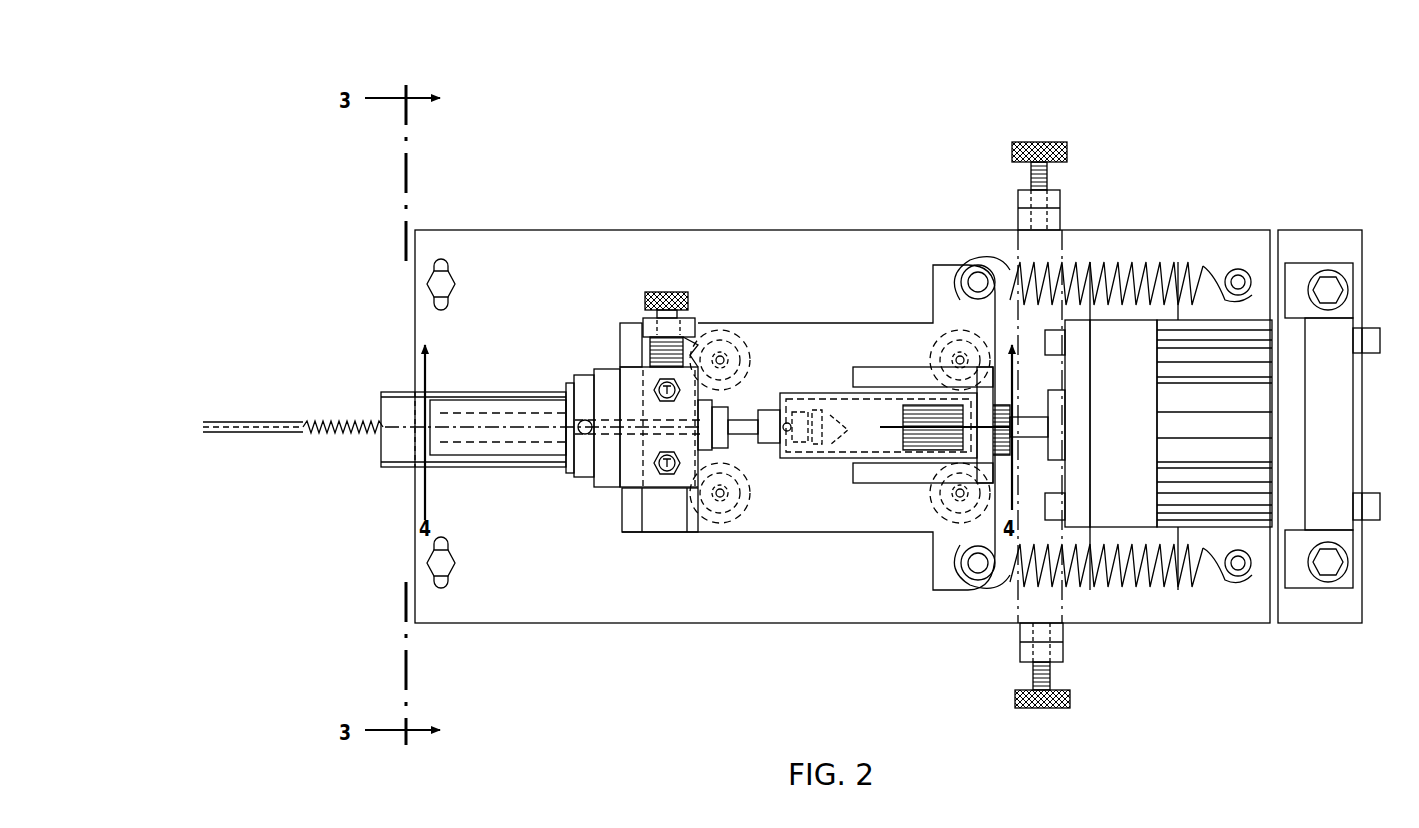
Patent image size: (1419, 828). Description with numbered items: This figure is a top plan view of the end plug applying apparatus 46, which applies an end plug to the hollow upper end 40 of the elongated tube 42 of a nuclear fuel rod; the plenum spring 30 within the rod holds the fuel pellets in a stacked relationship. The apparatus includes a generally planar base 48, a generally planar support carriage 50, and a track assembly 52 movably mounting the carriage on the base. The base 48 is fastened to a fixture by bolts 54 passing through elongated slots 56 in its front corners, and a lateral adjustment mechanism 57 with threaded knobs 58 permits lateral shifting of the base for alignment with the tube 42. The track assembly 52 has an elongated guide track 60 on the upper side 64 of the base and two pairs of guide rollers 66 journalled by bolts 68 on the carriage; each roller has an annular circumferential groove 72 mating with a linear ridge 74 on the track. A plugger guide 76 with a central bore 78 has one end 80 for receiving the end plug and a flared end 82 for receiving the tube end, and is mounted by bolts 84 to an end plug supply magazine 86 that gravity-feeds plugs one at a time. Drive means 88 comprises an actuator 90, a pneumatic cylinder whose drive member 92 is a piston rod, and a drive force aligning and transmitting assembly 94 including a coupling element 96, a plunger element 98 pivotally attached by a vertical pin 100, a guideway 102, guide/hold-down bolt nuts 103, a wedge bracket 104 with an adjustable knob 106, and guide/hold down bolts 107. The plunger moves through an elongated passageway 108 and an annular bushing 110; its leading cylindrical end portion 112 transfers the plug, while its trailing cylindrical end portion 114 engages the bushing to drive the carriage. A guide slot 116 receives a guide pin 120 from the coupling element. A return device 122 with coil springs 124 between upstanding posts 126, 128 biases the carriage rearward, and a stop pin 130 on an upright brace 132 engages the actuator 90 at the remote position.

The plenum spring 30 is at (342, 420).
The upper end 40 is at (303, 433).
The tube 42 is at (262, 434).
The end plug applying apparatus 46 is at (1200, 185).
The base 48 is at (770, 623).
The support carriage 50 is at (868, 535).
The track assembly 52 is at (392, 470).
The bolts 54 is at (455, 289).
The elongated slots 56 is at (445, 266).
The lateral adjustment mechanism 57 is at (1060, 220).
The threaded knobs 58 is at (1067, 152).
The guide track 60 is at (398, 392).
The upper side 64 is at (771, 597).
The guide rollers 66 is at (756, 326).
The bolts 68 is at (724, 360).
The annular circumferential groove 72 is at (730, 335).
The linear ridge 74 is at (502, 388).
The plugger guide 76 is at (524, 388).
The central bore 78 is at (488, 412).
The one end 80 is at (580, 478).
The flared end 82 is at (445, 415).
The bolts 84 is at (568, 383).
The end plug supply magazine 86 is at (600, 375).
The drive means 88 is at (1362, 453).
The actuator 90 is at (1130, 438).
The drive member 92 is at (1035, 398).
The drive force aligning and transmitting assembly 94 is at (835, 470).
The coupling element 96 is at (845, 390).
The plunger element 98 is at (748, 443).
The vertical pin 100 is at (790, 420).
The guideway 102 is at (622, 332).
The guide/hold-down bolt nuts 103 is at (660, 385).
The wedge bracket 104 is at (698, 325).
The adjustable knob 106 is at (686, 295).
The guide/hold down bolts 107 is at (665, 388).
The elongated passageway 108 is at (612, 490).
The annular bushing 110 is at (730, 408).
The leading cylindrical end portion 112 is at (575, 412).
The trailing cylindrical end portion 114 is at (768, 410).
The guide slot 116 is at (850, 418).
The guide pin 120 is at (850, 440).
The return device 122 is at (1132, 252).
The coil springs 124 is at (1140, 265).
The upstanding posts 126 is at (1252, 268).
The upstanding posts 128 is at (968, 268).
The stop pin 130 is at (1065, 410).
The upright brace 132 is at (1000, 462).